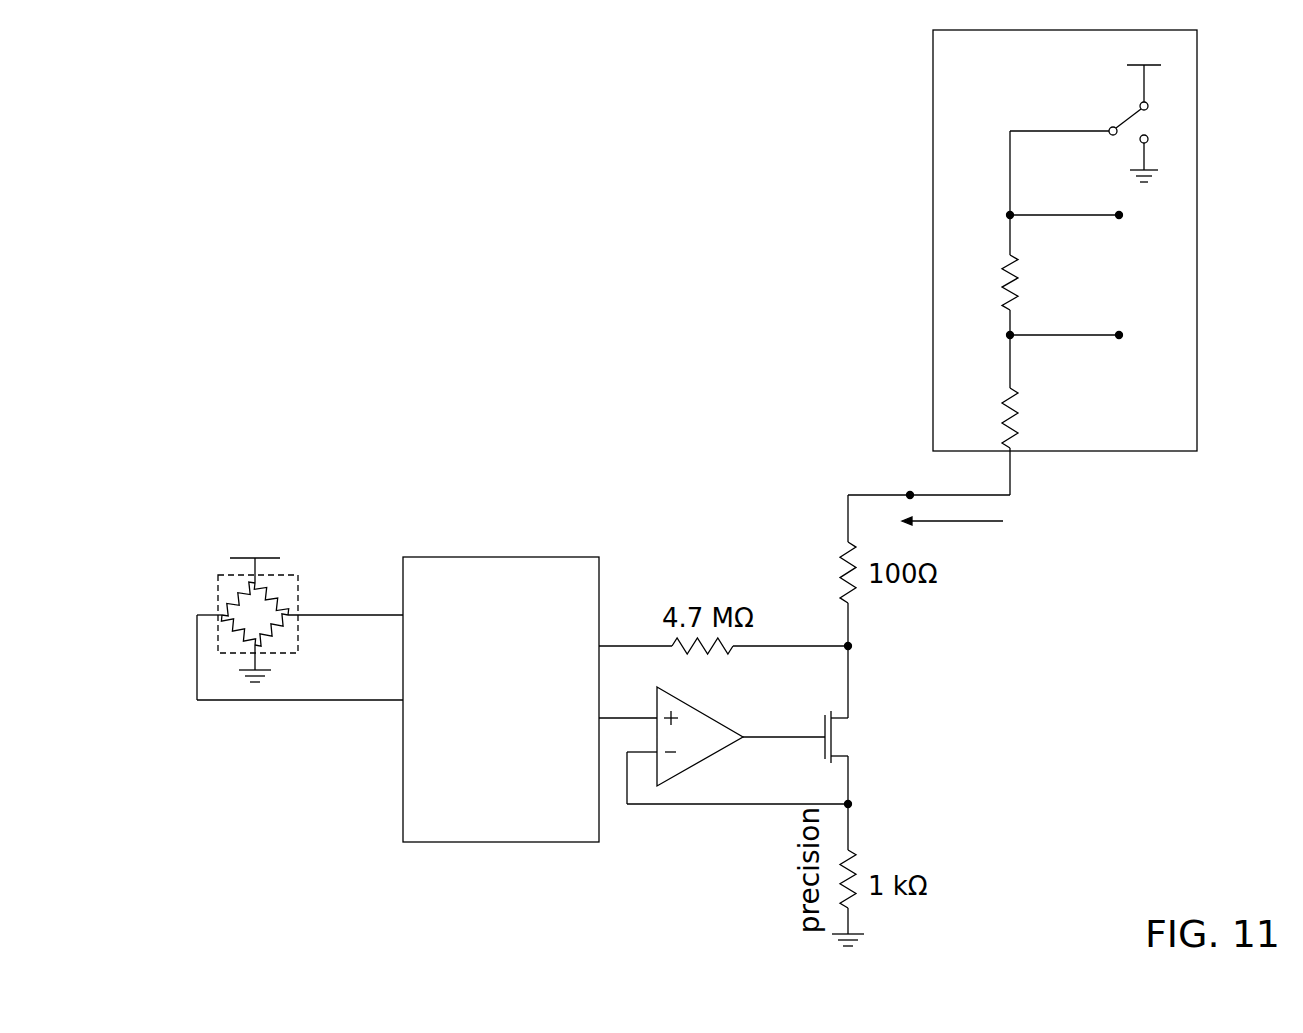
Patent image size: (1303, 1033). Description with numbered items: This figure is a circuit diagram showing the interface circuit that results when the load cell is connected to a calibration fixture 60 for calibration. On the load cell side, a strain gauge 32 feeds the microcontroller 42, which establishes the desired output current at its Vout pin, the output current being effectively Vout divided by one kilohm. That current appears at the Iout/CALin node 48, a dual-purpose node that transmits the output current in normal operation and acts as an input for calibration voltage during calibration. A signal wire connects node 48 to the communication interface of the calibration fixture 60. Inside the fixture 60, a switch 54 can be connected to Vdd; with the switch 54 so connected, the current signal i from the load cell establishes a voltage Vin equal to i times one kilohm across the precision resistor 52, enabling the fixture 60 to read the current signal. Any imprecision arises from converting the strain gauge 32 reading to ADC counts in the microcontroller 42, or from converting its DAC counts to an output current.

The strain gauge 32 is at (292, 575).
The microcontroller 42 is at (494, 557).
The Iout/CALin node 48 is at (912, 497).
The precision resistor 52 is at (1014, 258).
The switch 54 is at (1138, 106).
The calibration fixture 60 is at (933, 200).